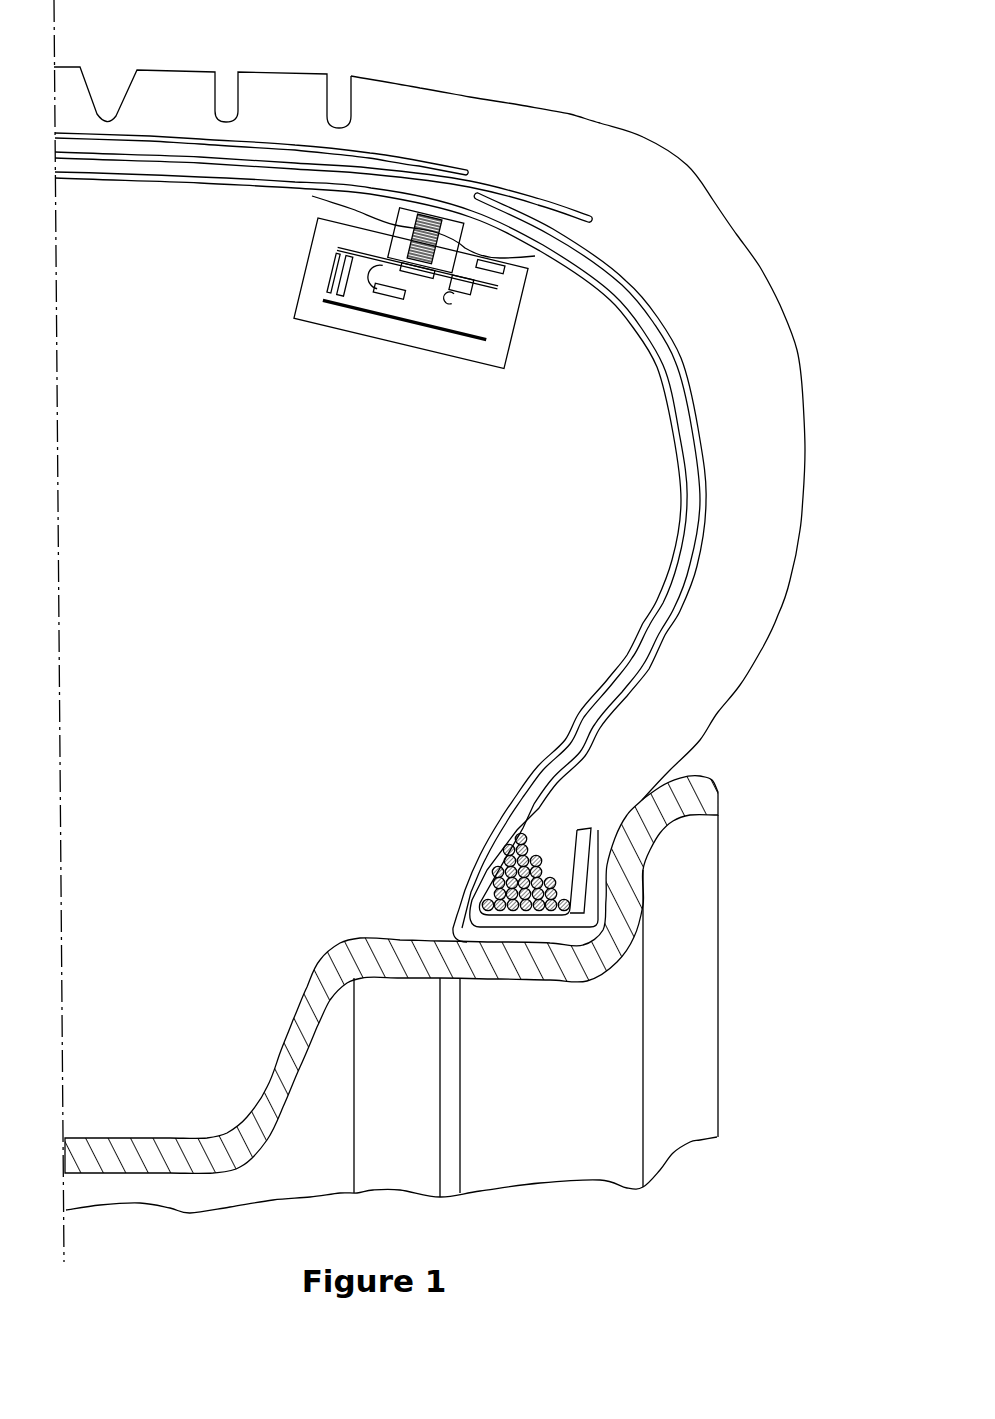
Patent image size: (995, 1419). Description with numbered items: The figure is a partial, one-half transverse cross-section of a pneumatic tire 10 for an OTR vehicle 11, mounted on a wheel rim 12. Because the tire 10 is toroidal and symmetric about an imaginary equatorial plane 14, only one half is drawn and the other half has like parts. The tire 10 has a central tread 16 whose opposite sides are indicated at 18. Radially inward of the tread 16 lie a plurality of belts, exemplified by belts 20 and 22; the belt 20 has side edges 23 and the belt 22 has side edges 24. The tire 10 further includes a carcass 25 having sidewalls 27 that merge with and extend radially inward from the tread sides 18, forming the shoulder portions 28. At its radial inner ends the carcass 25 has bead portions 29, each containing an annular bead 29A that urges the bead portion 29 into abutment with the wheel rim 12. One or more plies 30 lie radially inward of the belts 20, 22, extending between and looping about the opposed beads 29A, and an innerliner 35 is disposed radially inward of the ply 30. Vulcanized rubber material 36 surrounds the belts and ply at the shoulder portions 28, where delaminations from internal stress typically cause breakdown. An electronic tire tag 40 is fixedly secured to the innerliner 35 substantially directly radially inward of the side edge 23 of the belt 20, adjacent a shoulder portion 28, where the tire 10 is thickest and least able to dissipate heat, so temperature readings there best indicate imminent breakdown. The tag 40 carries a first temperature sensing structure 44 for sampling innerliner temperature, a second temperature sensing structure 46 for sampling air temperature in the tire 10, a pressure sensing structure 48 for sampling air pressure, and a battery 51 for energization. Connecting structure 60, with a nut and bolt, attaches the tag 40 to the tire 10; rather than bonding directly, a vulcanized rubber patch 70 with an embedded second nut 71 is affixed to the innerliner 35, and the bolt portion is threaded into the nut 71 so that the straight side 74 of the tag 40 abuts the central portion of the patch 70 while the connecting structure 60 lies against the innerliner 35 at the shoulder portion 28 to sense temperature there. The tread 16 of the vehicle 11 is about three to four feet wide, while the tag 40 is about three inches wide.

The pneumatic tire 10 is at (786, 280).
The OTR vehicle 11 is at (672, 972).
The wheel rim 12 is at (488, 985).
The equatorial plane 14 is at (58, 552).
The central tread 16 is at (285, 68).
The tread sides 18 is at (641, 136).
The belt 20 is at (128, 147).
The belt 22 is at (208, 142).
The belt side edge 23 is at (590, 220).
The belt side edge 24 is at (467, 172).
The carcass 25 is at (800, 372).
The sidewall 27 is at (793, 570).
The shoulder portion 28 is at (733, 200).
The bead portion 29 is at (742, 720).
The bead 29A is at (550, 870).
The ply 30 is at (663, 647).
The innerliner 35 is at (643, 623).
The vulcanized rubber material 36 is at (765, 518).
The electronic tire tag 40 is at (412, 310).
The first temperature sensing structure 44 is at (424, 245).
The second temperature sensing structure 46 is at (417, 267).
The pressure sensing structure 48 is at (416, 279).
The battery 51 is at (404, 319).
The connecting structure 60 is at (411, 287).
The vulcanized rubber patch 70 is at (538, 262).
The second internally threaded nut 71 is at (364, 207).
The straight side of tag 74 is at (496, 262).